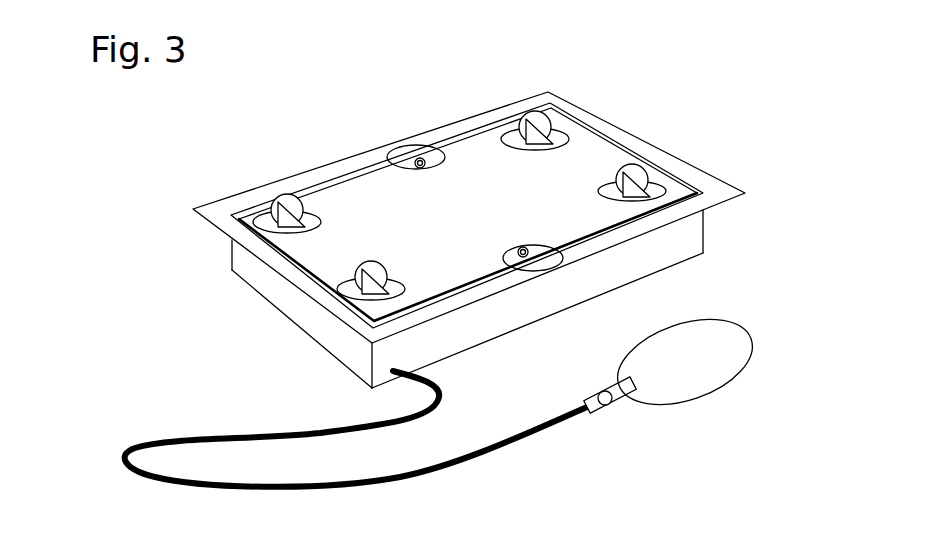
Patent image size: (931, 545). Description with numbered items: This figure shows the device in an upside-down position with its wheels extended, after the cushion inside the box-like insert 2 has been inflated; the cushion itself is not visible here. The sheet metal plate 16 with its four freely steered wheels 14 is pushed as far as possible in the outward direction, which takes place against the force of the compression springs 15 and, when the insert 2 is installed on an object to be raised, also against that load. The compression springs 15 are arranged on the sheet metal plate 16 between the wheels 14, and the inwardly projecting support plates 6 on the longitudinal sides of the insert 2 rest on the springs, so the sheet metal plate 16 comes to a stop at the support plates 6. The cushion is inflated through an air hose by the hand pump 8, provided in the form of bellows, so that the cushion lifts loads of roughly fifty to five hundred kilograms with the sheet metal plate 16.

The box-like insert 2 is at (292, 304).
The support plates 6 is at (398, 158).
The hand pump 8 is at (695, 370).
The wheels 14 is at (632, 170).
The compression springs 15 is at (420, 168).
The sheet metal plate 16 is at (460, 194).